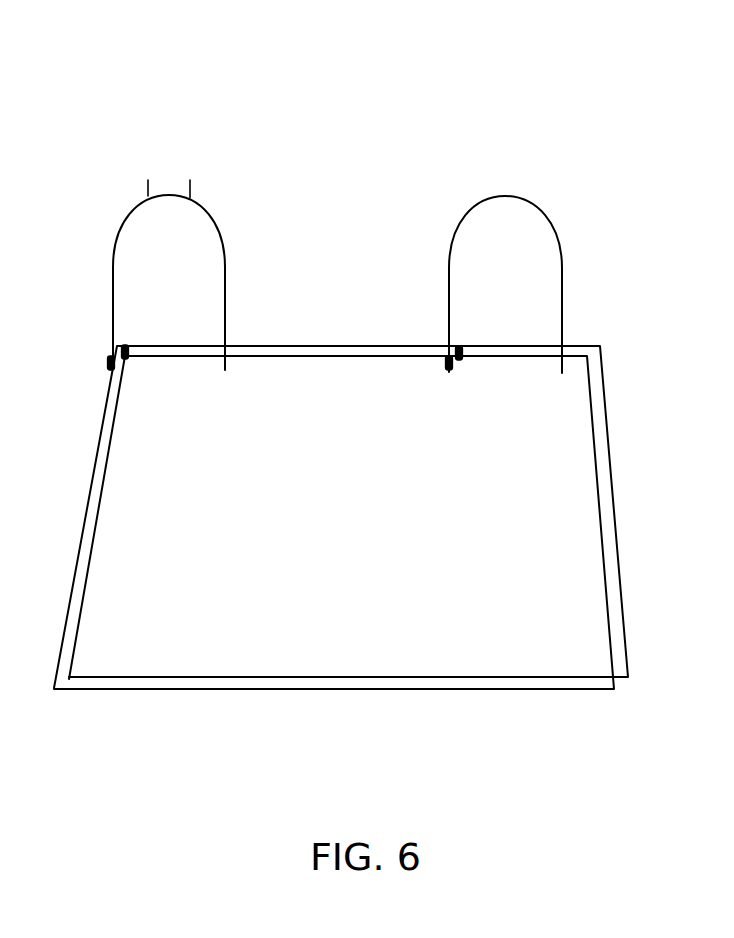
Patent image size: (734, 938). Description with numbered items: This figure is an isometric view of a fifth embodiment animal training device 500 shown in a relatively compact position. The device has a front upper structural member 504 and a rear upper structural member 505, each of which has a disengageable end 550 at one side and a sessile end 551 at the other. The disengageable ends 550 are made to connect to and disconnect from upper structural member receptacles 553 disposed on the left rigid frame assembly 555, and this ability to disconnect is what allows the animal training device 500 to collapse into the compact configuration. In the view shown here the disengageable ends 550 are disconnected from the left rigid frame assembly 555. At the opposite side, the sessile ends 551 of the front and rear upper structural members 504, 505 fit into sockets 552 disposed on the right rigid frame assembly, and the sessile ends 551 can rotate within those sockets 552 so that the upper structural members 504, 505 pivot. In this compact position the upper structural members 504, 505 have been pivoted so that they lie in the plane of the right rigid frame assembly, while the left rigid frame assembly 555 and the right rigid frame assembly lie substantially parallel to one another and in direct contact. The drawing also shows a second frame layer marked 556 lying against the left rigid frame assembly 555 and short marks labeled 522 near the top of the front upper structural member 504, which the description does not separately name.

The animal training device 500 is at (350, 58).
The front upper structural member 504 is at (226, 258).
The rear upper structural member 505 is at (563, 258).
The electrode leads 522 is at (192, 184).
The disengageable ends 550 is at (227, 364).
The sessile ends 551 is at (112, 343).
The sockets 552 is at (110, 366).
The upper structural member receptacles 553 is at (126, 350).
The left rigid frame assembly 555 is at (632, 425).
The second layer of substrate 556 is at (614, 460).